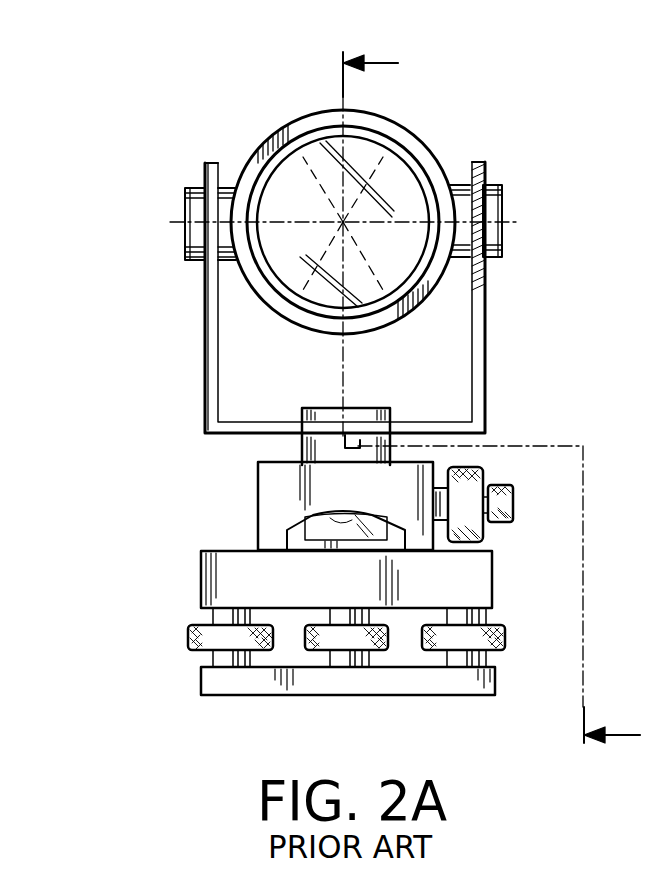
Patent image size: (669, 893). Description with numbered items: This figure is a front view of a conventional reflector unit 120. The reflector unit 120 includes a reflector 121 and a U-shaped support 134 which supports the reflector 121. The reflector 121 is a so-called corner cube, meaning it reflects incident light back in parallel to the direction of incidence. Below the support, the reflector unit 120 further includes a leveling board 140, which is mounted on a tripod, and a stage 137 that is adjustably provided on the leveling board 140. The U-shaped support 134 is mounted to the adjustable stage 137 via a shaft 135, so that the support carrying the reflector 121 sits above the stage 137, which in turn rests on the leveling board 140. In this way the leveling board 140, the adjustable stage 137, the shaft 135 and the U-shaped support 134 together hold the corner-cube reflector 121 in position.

The reflector unit 120 is at (433, 153).
The reflector 121 is at (373, 140).
The U-shaped support 134 is at (483, 389).
The shaft 135 is at (330, 448).
The stage 137 is at (263, 476).
The leveling board 140 is at (477, 572).